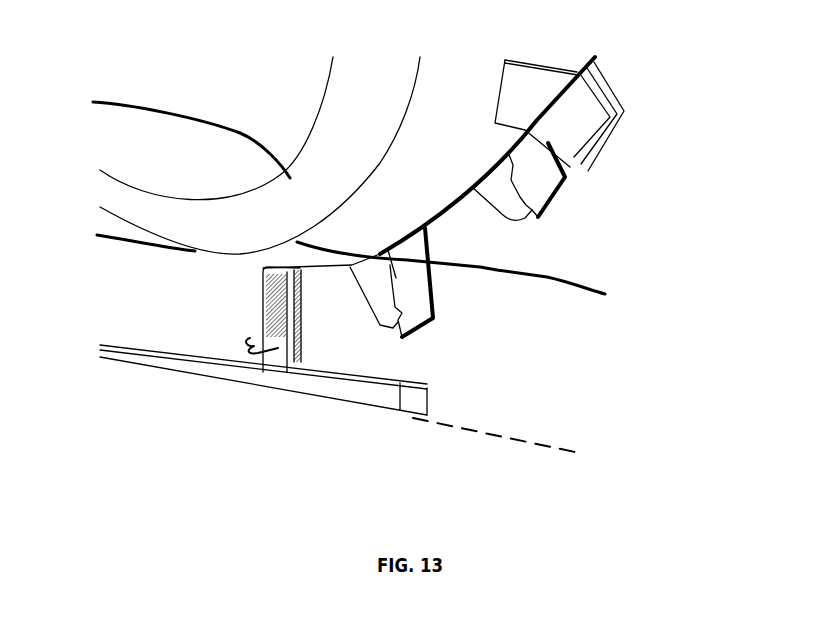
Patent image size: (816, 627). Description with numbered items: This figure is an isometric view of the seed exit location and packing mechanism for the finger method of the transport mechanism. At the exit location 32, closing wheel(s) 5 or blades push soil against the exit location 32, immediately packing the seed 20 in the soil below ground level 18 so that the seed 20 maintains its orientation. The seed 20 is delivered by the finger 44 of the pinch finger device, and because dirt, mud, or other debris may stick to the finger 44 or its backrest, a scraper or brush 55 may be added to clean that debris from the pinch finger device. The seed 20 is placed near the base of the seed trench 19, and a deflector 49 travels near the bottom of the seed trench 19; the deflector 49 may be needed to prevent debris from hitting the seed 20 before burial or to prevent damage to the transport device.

The closing wheel 5 is at (181, 132).
The ground level 18 is at (497, 270).
The seed trench 19 is at (472, 431).
The seed 20 is at (262, 313).
The exit location 32 is at (245, 357).
The finger 44 is at (288, 340).
The deflector 49 is at (355, 390).
The scraper or brush 55 is at (572, 152).